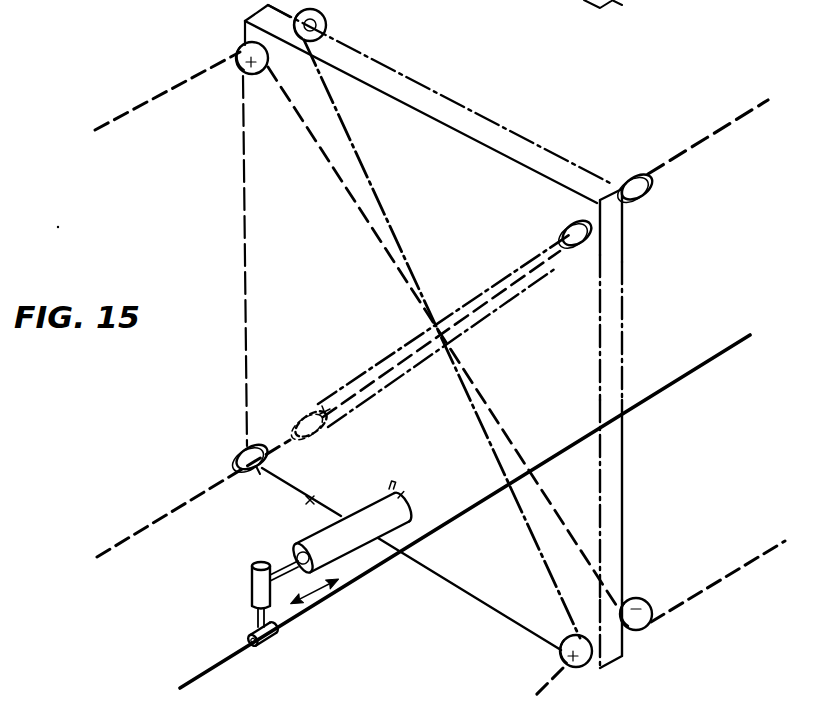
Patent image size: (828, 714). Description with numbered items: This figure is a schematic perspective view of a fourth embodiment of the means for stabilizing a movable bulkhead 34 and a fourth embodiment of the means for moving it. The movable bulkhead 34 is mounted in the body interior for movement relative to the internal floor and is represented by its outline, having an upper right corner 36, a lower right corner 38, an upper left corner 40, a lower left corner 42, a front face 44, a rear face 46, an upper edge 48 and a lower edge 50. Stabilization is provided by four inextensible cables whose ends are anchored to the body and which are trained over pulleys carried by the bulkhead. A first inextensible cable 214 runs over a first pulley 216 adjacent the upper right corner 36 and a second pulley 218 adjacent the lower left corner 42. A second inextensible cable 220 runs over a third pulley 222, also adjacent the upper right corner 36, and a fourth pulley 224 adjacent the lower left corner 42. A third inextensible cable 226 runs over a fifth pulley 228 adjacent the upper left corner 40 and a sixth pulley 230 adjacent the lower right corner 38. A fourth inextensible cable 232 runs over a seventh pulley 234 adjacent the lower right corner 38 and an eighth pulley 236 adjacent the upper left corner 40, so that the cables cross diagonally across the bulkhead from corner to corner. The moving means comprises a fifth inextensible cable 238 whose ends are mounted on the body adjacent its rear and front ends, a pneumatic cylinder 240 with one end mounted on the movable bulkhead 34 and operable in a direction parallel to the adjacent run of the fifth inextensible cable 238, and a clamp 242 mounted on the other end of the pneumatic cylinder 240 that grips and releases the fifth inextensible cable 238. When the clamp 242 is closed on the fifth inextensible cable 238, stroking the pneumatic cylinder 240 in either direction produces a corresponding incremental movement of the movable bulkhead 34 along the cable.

The movable bulkhead 34 is at (417, 83).
The upper right corner 36 is at (244, 8).
The lower right corner 38 is at (258, 471).
The upper left corner 40 is at (597, 192).
The lower left corner 42 is at (622, 662).
The front face 44 is at (318, 495).
The rear face 46 is at (625, 512).
The upper edge 48 is at (475, 113).
The lower edge 50 is at (474, 599).
The first inextensible cable 214 is at (165, 92).
The first pulley 216 is at (238, 76).
The second pulley 218 is at (641, 600).
The second inextensible cable 220 is at (352, 2).
The third pulley 222 is at (325, 27).
The fourth pulley 224 is at (560, 656).
The third inextensible cable 226 is at (138, 528).
The fifth pulley 228 is at (651, 192).
The sixth pulley 230 is at (240, 450).
The fourth inextensible cable 232 is at (725, 133).
The seventh pulley 234 is at (322, 433).
The eighth pulley 236 is at (588, 242).
The fifth inextensible cable 238 is at (683, 380).
The pneumatic cylinder 240 is at (360, 510).
The clamp 242 is at (252, 590).